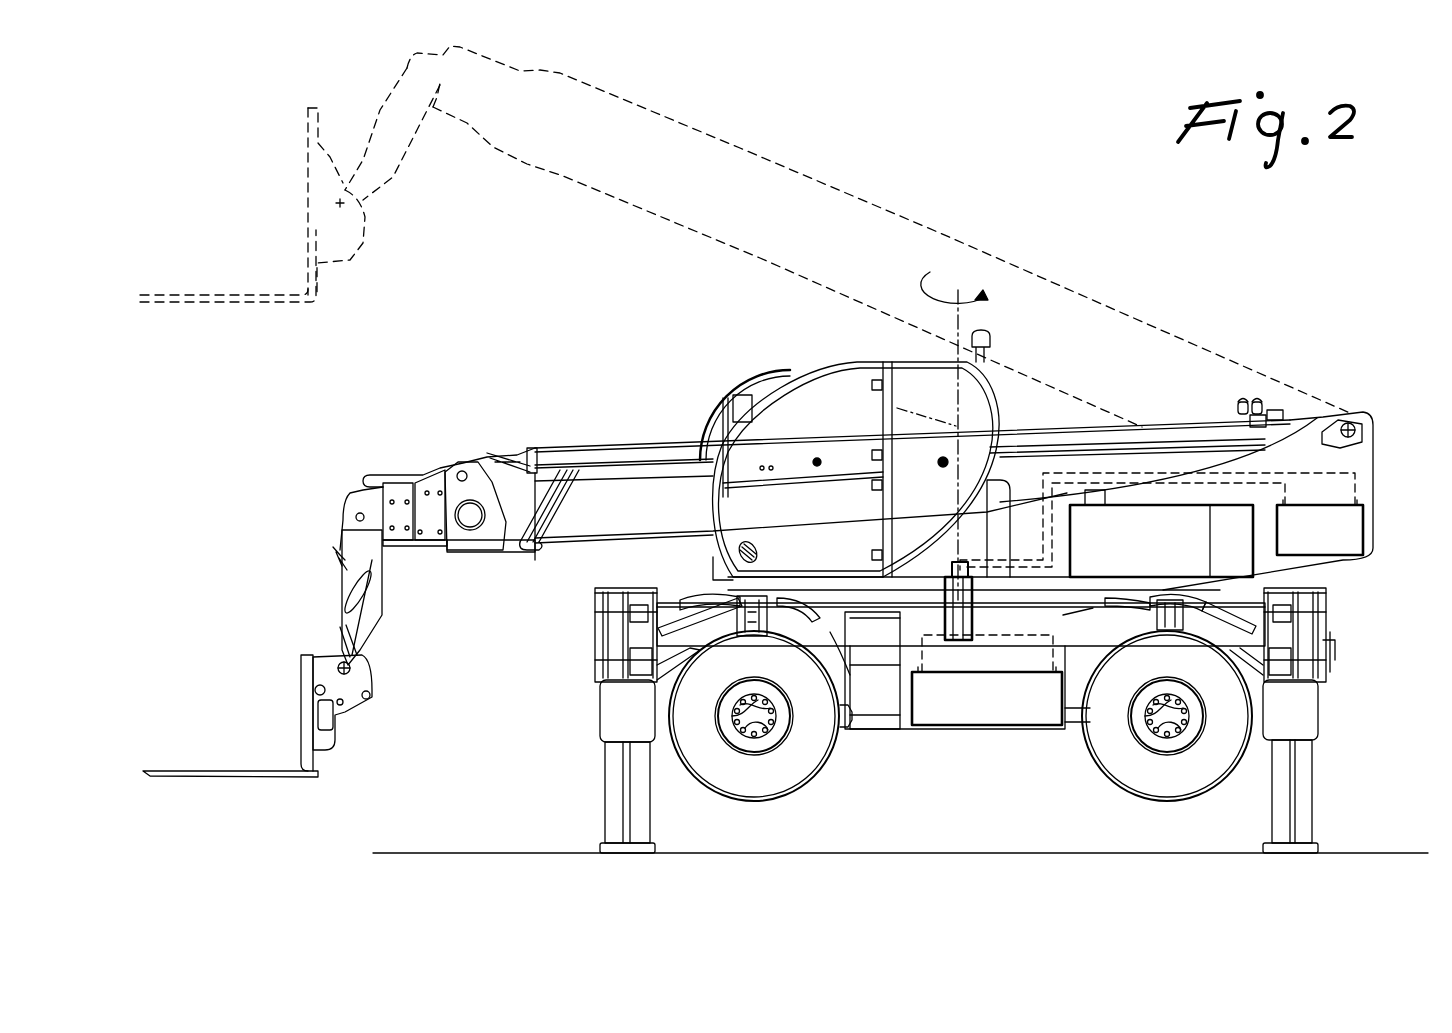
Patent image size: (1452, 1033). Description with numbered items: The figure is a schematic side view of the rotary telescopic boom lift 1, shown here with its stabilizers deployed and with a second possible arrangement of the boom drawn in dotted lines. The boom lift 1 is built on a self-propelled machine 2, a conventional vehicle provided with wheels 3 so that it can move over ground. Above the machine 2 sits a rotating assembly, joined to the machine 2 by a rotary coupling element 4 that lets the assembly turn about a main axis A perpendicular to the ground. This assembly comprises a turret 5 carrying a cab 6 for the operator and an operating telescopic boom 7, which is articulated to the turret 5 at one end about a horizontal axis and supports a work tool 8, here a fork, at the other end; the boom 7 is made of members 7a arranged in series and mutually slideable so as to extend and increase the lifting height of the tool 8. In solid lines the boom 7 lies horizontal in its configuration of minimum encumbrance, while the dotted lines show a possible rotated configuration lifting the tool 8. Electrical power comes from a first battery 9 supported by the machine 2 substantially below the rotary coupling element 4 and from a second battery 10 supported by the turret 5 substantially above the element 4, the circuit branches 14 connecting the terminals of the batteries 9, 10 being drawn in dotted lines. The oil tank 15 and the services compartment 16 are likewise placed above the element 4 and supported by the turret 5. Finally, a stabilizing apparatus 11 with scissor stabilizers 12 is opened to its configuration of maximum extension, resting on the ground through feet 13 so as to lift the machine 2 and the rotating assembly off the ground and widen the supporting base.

The rotary telescopic boom lift 1 is at (1052, 248).
The self-propelled machine 2 is at (997, 740).
The wheels 3 is at (775, 770).
The rotary coupling element 4 is at (965, 655).
The turret 5 is at (1380, 455).
The cab 6 is at (795, 405).
The telescopic boom 7 is at (741, 138).
The members 7a is at (400, 492).
The work tool 8 is at (225, 315).
The first battery 9 is at (1020, 700).
The second battery 10 is at (1330, 537).
The stabilizing apparatus 11 is at (590, 791).
The scissor stabilizers 12 is at (630, 810).
The feet 13 is at (613, 848).
The circuit branches 14 is at (1115, 467).
The oil tank 15 is at (1177, 527).
The services compartment 16 is at (1230, 523).
The main axis A is at (862, 365).